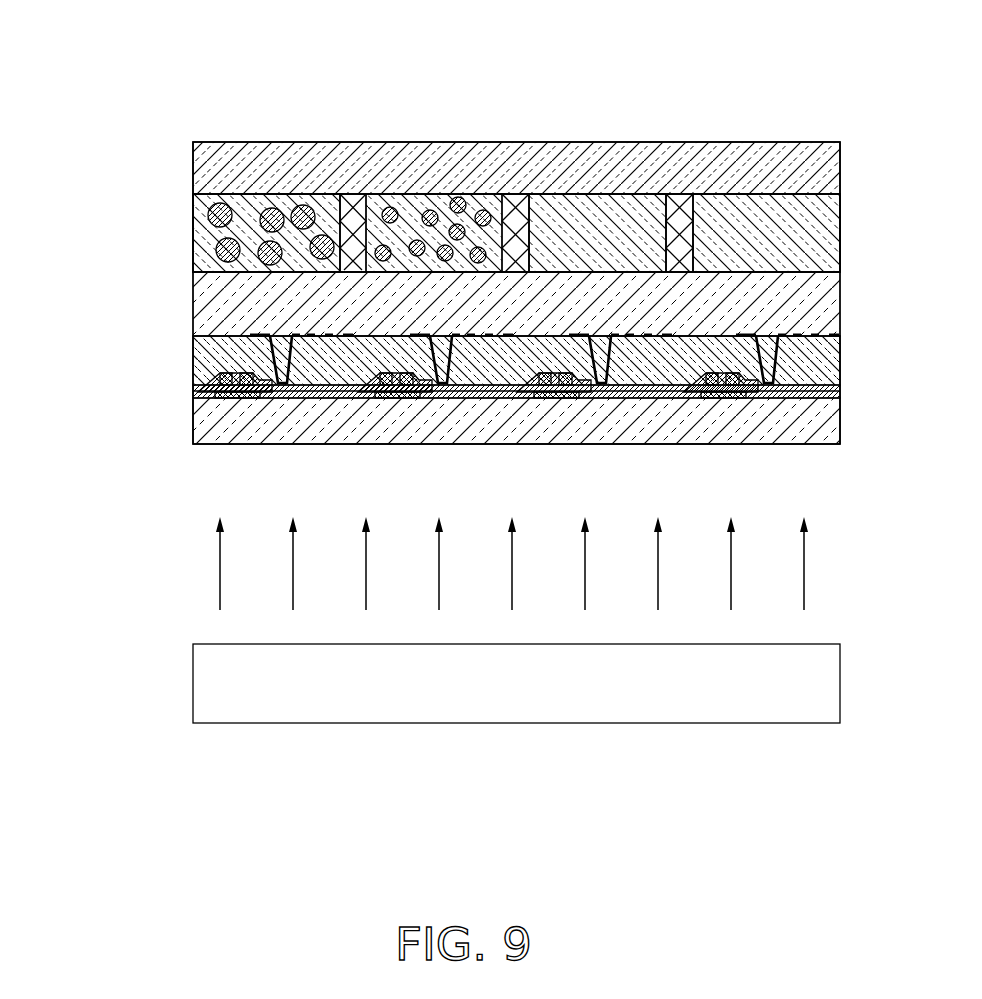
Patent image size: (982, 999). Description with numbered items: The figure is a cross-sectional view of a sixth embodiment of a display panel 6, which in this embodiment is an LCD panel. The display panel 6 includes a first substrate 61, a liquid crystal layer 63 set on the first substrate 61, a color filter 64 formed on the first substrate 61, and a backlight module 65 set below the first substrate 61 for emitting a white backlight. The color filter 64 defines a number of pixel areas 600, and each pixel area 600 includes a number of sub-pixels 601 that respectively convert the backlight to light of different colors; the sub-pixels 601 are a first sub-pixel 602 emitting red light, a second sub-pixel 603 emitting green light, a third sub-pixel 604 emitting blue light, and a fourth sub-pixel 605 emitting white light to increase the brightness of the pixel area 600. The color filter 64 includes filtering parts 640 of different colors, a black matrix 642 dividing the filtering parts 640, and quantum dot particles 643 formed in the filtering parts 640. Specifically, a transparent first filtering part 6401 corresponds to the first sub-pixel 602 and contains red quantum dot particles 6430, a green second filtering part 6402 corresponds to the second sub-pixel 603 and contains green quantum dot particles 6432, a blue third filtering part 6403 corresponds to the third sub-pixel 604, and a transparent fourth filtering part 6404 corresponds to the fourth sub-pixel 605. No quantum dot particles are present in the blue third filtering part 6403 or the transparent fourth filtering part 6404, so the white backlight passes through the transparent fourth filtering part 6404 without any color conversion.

The display panel 6 is at (248, 39).
The pixel area 600 is at (780, 73).
The first sub-pixel 602 is at (350, 130).
The second sub-pixel 603 is at (513, 130).
The third sub-pixel 604 is at (677, 130).
The fourth sub-pixel 605 is at (840, 130).
The color filter 64 is at (118, 139).
The black matrix 642 is at (352, 210).
The quantum dot particles 643 is at (201, 200).
The filtering parts 640 is at (197, 211).
The red quantum dot particles 6430 is at (216, 249).
The green quantum dot particles 6432 is at (377, 262).
The transparent first filtering part 6401 is at (197, 262).
The green second filtering part 6402 is at (400, 262).
The blue third filtering part 6403 is at (632, 257).
The transparent fourth filtering part 6404 is at (797, 213).
The liquid crystal layer 63 is at (220, 320).
The first substrate 61 is at (213, 430).
The sub-pixels 601 is at (820, 255).
The backlight module 65 is at (205, 685).